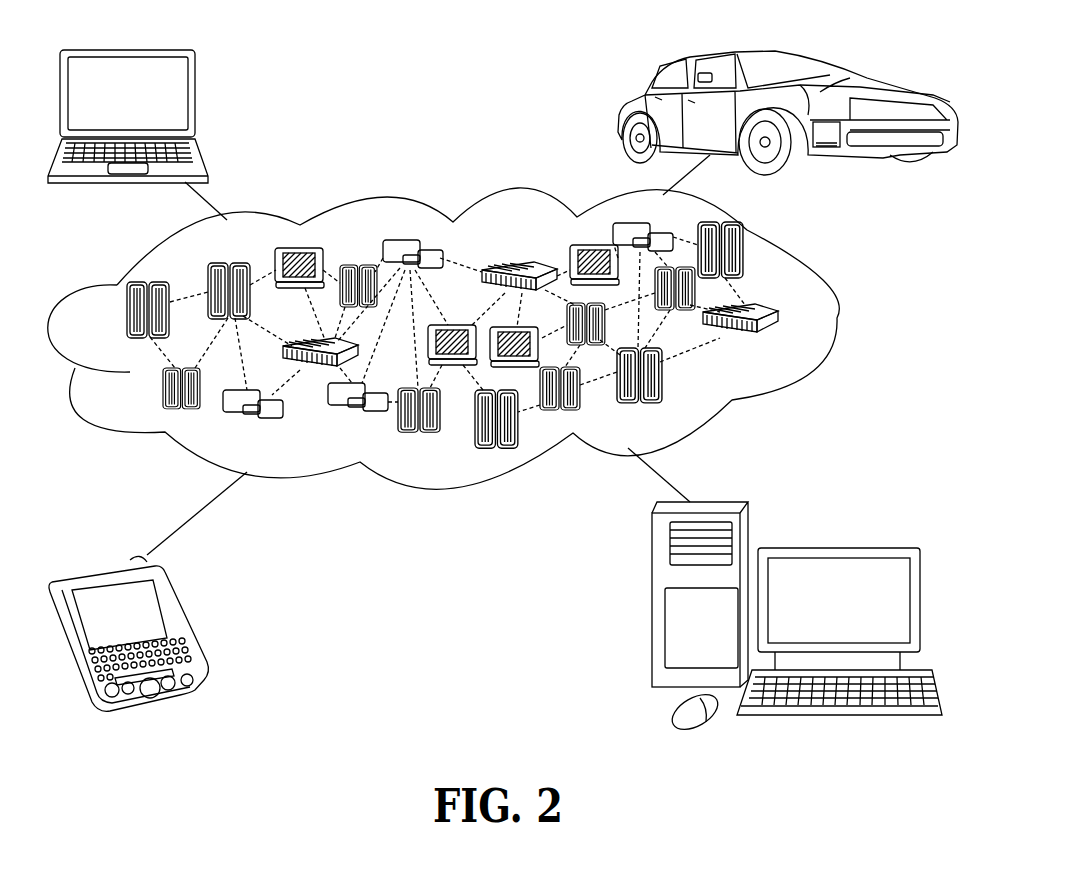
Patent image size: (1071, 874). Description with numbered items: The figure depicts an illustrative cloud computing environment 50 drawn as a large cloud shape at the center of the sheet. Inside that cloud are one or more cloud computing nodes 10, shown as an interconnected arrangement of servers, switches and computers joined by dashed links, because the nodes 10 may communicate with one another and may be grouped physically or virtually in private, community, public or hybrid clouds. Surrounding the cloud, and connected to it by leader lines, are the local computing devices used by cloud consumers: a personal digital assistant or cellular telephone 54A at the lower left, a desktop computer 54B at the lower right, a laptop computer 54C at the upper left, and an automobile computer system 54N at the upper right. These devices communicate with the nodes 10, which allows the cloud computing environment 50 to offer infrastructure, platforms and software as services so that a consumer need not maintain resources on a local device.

The cloud computing nodes 10 is at (798, 348).
The cloud computing environment 50 is at (838, 320).
The personal digital assistant (PDA) or cellular telephone 54A is at (185, 622).
The desktop computer 54B is at (848, 530).
The laptop computer 54C is at (196, 99).
The automobile computer system 54N is at (620, 113).